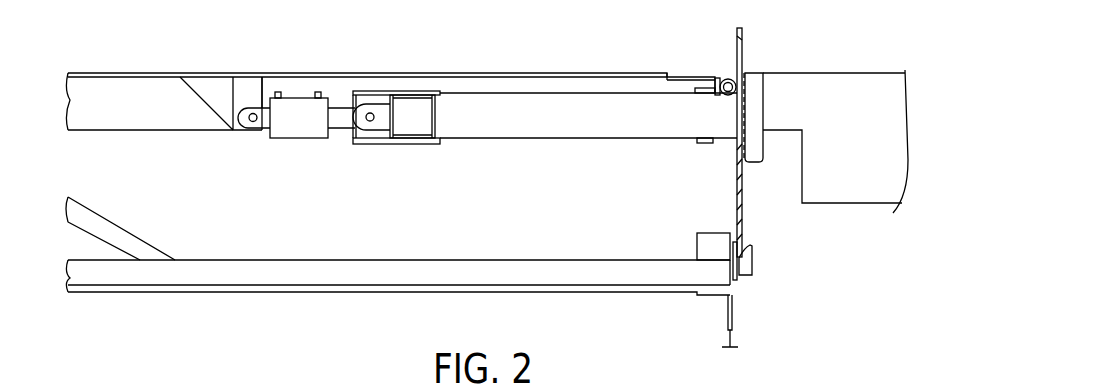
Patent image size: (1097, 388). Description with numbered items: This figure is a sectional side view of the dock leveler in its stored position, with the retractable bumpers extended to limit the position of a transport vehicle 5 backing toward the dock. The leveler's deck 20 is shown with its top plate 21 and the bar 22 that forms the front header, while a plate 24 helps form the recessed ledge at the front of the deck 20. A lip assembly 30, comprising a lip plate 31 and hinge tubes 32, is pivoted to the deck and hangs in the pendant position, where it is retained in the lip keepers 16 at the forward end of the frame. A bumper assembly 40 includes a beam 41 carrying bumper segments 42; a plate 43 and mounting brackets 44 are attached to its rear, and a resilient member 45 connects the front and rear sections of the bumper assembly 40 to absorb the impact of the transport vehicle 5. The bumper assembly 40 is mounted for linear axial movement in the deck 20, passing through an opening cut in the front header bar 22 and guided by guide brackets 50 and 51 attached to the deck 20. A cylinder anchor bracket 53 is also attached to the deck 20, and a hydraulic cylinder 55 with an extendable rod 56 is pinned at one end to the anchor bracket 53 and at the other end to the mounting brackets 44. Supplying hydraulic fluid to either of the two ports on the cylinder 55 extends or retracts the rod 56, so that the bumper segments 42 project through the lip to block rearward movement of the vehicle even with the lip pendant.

The transport vehicle 5 is at (845, 73).
The lip keepers 16 is at (757, 262).
The deck 20 is at (390, 81).
The top plate 21 is at (430, 73).
The front header bar 22 is at (712, 86).
The plate 24 is at (672, 77).
The lip assembly 30 is at (774, 142).
The lip plate 31 is at (742, 210).
The hinge tubes 32 is at (724, 79).
The bumper assembly 40 is at (588, 138).
The beam 41 is at (532, 138).
The bumper segments 42 is at (755, 73).
The plate 43 is at (386, 100).
The mounting brackets 44 is at (378, 133).
The resilient member 45 is at (417, 130).
The guide bracket 50 is at (703, 143).
The guide bracket 51 is at (403, 144).
The cylinder anchor bracket 53 is at (263, 88).
The hydraulic cylinder 55 is at (293, 140).
The extendable rod 56 is at (343, 122).